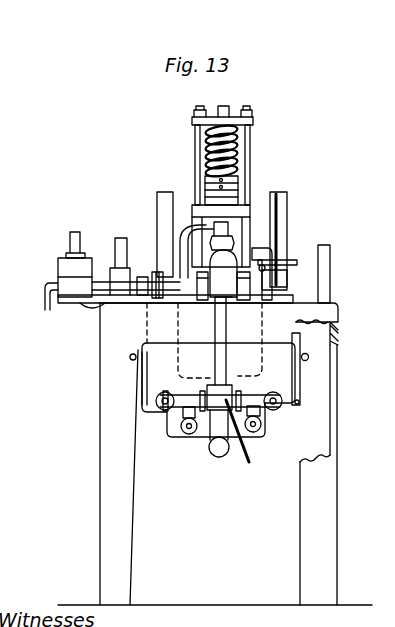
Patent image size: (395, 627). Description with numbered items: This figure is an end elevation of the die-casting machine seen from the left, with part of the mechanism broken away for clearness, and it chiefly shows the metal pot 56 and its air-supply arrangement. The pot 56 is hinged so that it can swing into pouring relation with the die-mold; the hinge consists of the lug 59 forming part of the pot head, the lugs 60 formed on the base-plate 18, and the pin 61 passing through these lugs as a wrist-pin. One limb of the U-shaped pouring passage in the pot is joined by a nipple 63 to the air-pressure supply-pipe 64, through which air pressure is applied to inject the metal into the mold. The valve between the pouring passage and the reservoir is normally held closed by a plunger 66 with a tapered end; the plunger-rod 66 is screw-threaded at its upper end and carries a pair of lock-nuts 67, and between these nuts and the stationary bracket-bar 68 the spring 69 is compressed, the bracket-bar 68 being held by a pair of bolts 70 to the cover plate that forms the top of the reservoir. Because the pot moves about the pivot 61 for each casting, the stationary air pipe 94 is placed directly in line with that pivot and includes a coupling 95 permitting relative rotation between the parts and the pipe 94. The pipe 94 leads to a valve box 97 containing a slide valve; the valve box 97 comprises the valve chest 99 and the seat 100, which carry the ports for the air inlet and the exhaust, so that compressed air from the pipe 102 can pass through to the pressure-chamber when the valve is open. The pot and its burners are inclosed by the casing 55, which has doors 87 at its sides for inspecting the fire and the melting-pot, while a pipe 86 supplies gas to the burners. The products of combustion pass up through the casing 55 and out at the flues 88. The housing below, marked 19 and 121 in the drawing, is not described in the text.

The base-plate 18 is at (340, 312).
The housing casing 19 is at (337, 480).
The protecting casing 55 is at (150, 372).
The metal pot 56 is at (262, 392).
The lug 59 is at (223, 297).
The lugs 60 is at (243, 299).
The pin 61 is at (264, 292).
The nipple 63 is at (232, 244).
The air-pressure supply-pipe 64 is at (160, 270).
The plunger 66 is at (226, 115).
The lock-nuts 67 is at (205, 183).
The bracket-bar 68 is at (254, 121).
The spring 69 is at (238, 172).
The bolts 70 is at (250, 152).
The gas pipe 86 is at (227, 393).
The doors 87 is at (299, 380).
The flues 88 is at (287, 203).
The stationary air pipe 94 is at (103, 280).
The coupling 95 is at (142, 272).
The valve box 97 is at (48, 292).
The valve chest 99 is at (58, 262).
The valve seat 100 is at (78, 288).
The compressed air pipe 102 is at (72, 240).
The posts 121 is at (330, 270).